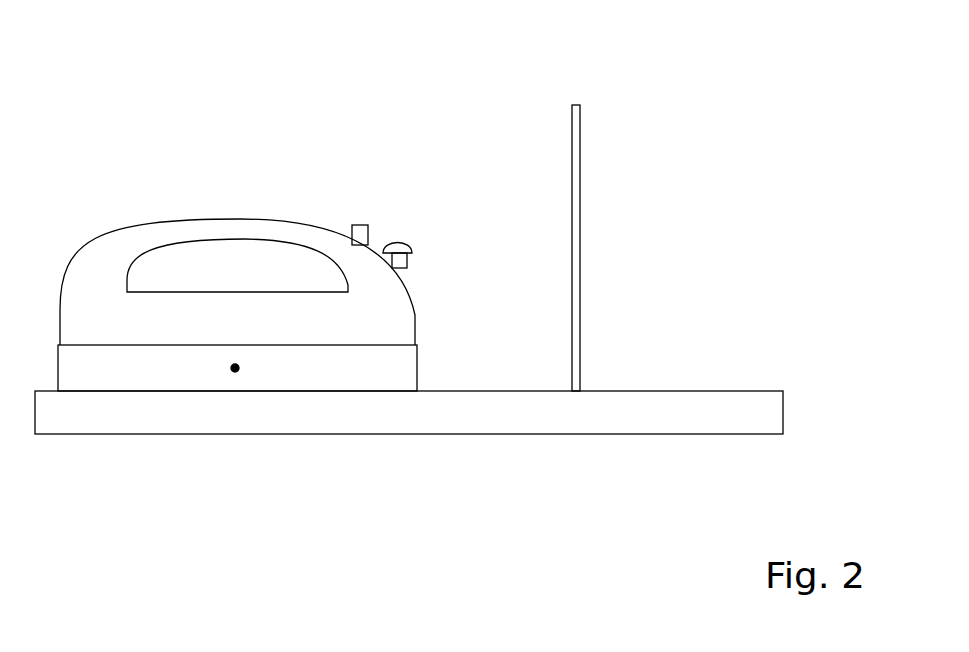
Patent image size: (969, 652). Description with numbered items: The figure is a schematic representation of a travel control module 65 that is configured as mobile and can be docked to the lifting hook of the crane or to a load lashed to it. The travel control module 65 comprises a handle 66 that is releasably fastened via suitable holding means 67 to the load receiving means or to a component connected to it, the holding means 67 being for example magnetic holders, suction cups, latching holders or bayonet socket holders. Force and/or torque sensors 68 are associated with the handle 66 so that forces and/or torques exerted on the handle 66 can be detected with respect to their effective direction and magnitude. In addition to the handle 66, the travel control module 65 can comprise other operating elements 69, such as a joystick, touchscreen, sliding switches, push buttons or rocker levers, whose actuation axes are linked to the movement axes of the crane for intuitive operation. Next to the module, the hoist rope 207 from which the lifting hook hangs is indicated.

The travel control module 65 is at (112, 168).
The handle 66 is at (192, 221).
The holding means 67 is at (398, 373).
The force and/or torque sensors 68 is at (234, 373).
The operating elements 69 is at (355, 225).
The hoist rope 207 is at (580, 162).